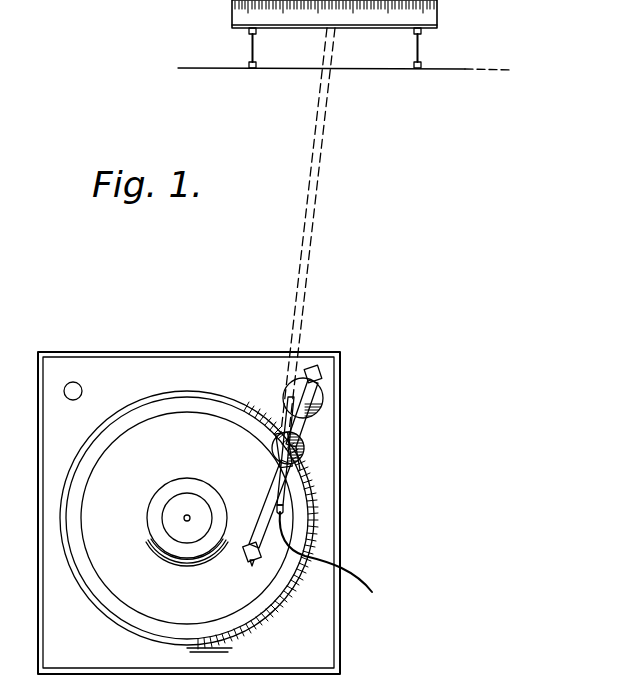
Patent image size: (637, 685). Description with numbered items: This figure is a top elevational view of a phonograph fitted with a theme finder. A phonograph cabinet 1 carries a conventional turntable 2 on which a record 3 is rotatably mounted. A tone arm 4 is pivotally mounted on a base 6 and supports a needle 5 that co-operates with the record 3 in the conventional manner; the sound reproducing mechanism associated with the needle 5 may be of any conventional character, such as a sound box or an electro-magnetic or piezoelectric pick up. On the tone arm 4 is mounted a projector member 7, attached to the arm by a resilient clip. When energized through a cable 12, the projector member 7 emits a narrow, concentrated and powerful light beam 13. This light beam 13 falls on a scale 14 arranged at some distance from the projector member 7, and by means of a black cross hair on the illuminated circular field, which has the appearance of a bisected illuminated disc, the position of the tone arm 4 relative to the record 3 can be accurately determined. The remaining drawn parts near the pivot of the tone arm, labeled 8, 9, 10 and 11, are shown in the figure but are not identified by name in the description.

The phonograph cabinet 1 is at (335, 485).
The turntable 2 is at (275, 622).
The record 3 is at (156, 603).
The tone arm 4 is at (258, 535).
The needle 5 is at (249, 561).
The base 6 is at (307, 388).
The projector member 7 is at (279, 489).
The pivot support 8 is at (313, 462).
The pivot block 9 is at (276, 447).
The pivot ball 10 is at (300, 450).
The rod tip 11 is at (276, 507).
The cable 12 is at (368, 572).
The light beam 13 is at (312, 234).
The scale 14 is at (437, 28).